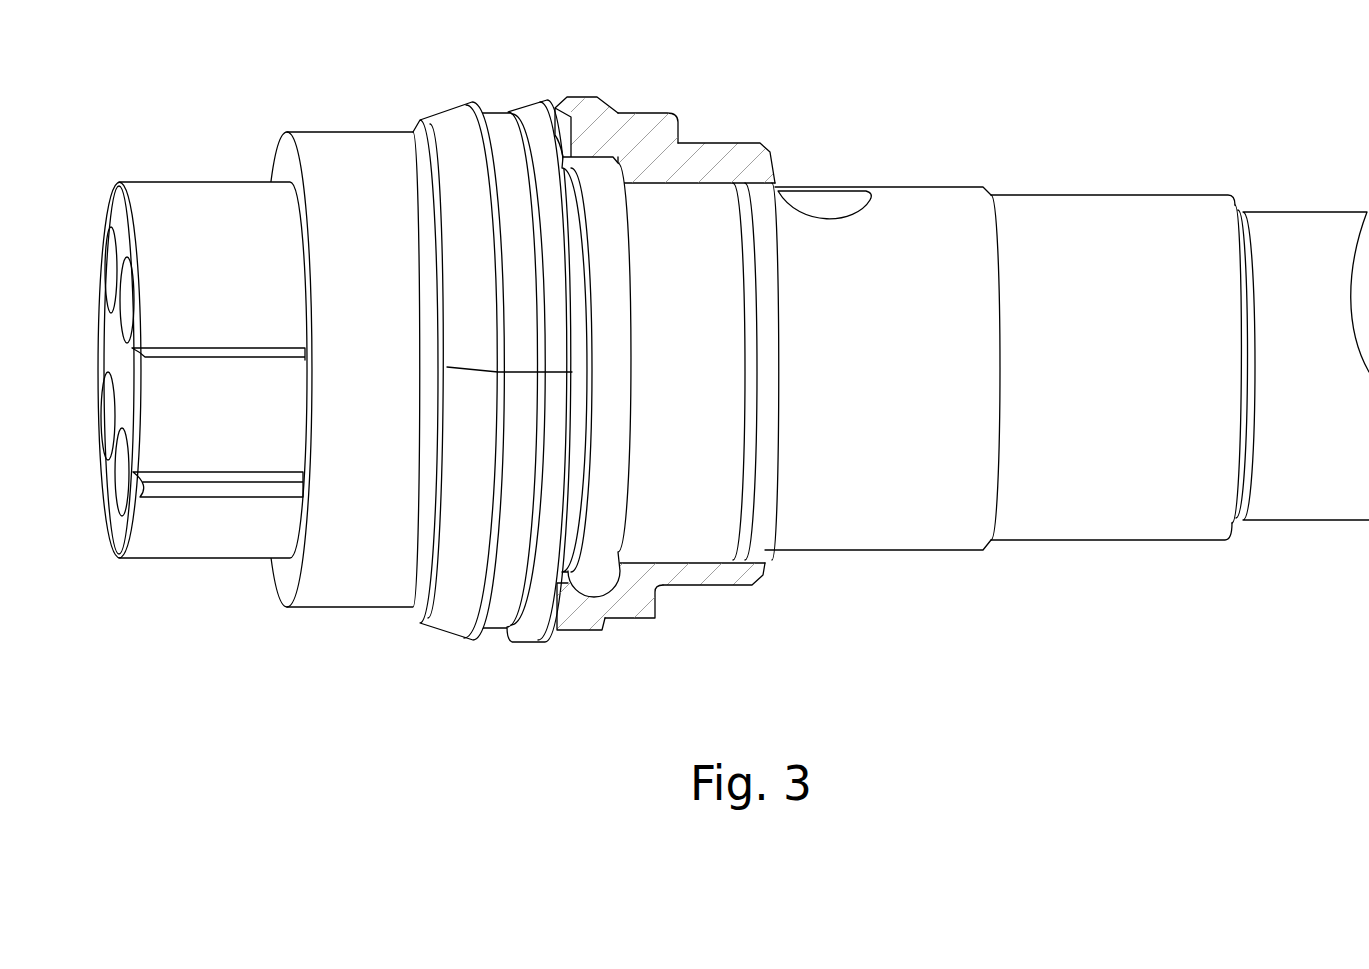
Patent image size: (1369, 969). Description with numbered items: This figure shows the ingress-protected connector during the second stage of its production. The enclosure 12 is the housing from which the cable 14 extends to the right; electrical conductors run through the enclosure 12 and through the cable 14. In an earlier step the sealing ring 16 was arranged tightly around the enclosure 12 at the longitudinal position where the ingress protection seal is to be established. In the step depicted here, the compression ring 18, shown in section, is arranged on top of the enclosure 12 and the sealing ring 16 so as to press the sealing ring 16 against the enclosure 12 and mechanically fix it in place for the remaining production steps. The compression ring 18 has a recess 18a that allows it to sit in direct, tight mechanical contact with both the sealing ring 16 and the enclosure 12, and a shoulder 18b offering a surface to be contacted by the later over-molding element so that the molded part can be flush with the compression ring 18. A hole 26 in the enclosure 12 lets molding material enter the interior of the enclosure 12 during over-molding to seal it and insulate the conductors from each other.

The enclosure 12 is at (957, 203).
The cable 14 is at (1303, 234).
The sealing ring 16 is at (592, 578).
The compression ring 18 is at (647, 135).
The recess 18a is at (584, 152).
The shoulder 18b is at (737, 148).
The hole 26 is at (837, 200).